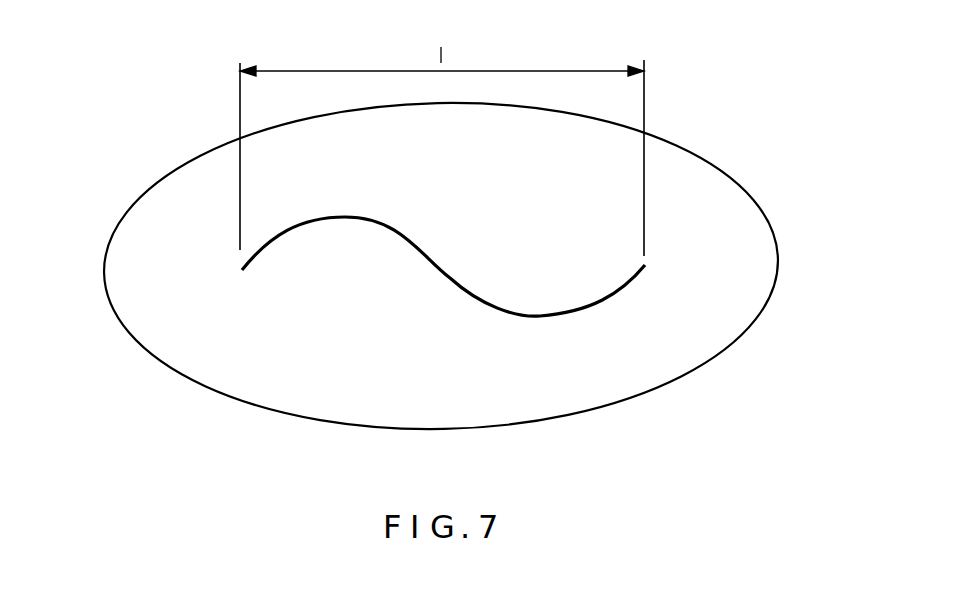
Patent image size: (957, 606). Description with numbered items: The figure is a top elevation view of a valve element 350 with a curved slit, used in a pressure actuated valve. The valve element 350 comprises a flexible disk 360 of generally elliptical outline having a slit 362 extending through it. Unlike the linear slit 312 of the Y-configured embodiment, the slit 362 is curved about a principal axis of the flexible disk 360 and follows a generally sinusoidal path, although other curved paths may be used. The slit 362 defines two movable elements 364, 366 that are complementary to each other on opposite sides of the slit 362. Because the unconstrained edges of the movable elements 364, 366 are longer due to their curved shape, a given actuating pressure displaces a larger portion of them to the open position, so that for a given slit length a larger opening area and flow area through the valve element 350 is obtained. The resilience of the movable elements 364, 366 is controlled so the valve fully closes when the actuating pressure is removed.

The valve element 350 is at (687, 110).
The flexible disk 360 is at (210, 365).
The slit 362 is at (272, 236).
The movable element 364 is at (303, 183).
The movable element 366 is at (370, 277).
The linear slit 312 is at (553, 268).